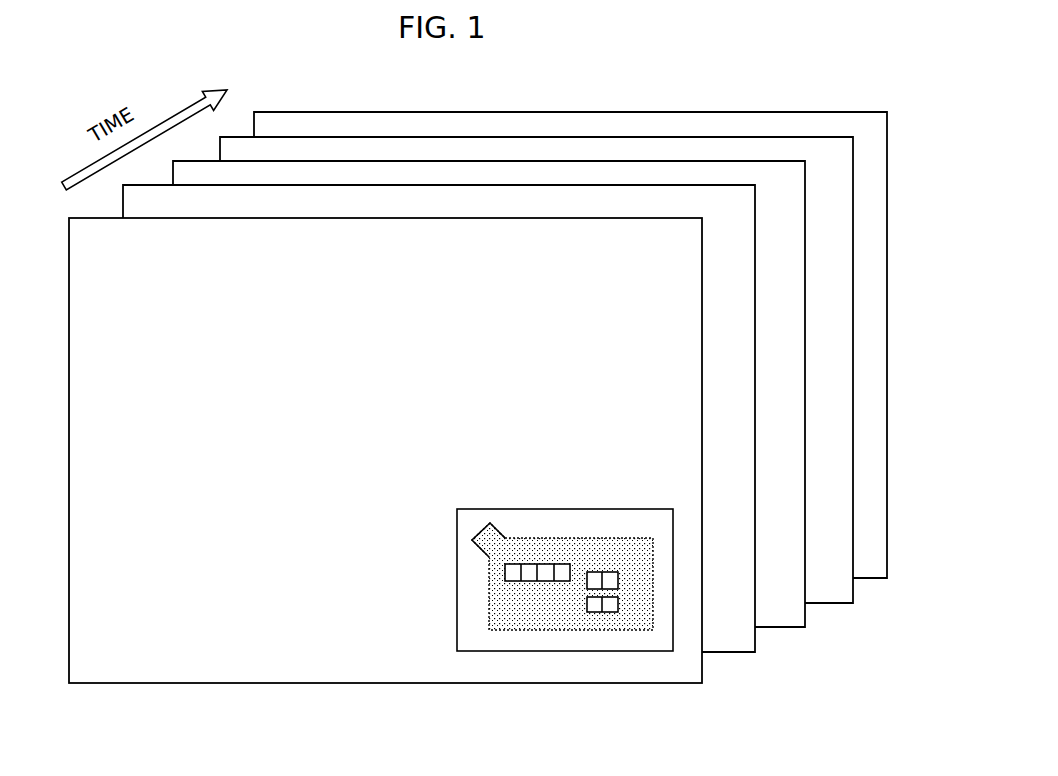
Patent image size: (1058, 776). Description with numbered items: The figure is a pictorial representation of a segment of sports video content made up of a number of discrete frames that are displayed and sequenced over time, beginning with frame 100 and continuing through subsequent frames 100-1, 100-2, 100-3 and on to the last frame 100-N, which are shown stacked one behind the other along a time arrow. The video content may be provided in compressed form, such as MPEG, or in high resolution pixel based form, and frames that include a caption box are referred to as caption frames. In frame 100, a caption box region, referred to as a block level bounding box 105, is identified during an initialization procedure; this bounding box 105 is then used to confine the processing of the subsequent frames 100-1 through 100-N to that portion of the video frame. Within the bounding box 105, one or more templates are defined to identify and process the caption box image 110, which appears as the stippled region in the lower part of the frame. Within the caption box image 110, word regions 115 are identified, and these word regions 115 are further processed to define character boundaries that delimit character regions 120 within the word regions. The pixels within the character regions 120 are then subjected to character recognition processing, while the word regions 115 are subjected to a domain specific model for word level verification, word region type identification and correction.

The frame 100 is at (208, 670).
The subsequent frame 100-1 is at (733, 632).
The subsequent frame 100-2 is at (787, 618).
The subsequent frame 100-3 is at (835, 582).
The Nth frame 100-N is at (877, 570).
The block level bounding box 105 is at (462, 652).
The caption box image 110 is at (537, 629).
The word regions 115 is at (620, 579).
The character regions 120 is at (612, 604).